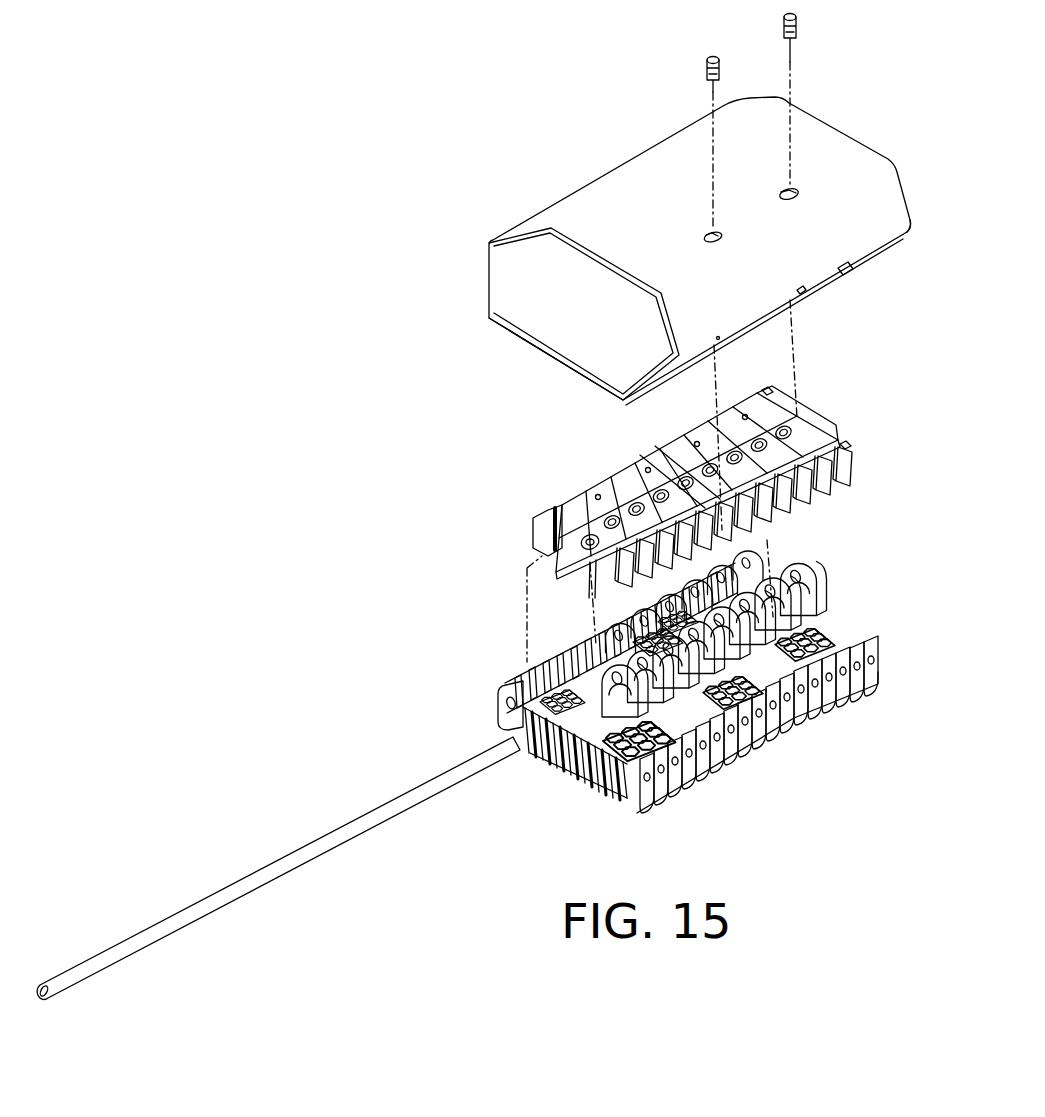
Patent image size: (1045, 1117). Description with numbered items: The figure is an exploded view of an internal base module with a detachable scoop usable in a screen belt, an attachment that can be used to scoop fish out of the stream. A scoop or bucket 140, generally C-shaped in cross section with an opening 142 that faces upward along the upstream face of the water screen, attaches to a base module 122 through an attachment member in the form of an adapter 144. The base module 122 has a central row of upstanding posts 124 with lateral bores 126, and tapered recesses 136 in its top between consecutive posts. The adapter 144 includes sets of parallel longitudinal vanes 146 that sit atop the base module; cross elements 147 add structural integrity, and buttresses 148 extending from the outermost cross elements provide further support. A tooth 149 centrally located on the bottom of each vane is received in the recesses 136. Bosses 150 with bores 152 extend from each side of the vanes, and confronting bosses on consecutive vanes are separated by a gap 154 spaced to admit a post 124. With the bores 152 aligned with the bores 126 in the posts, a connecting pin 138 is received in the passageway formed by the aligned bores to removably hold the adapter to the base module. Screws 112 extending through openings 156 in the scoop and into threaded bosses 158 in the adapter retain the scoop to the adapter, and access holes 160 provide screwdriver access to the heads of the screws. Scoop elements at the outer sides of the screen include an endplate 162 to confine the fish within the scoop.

The screws 112 is at (797, 31).
The base module 122 is at (783, 730).
The posts 124 is at (818, 606).
The lateral bores 126 is at (792, 575).
The tapered recesses 136 is at (570, 758).
The connecting pin 138 is at (353, 823).
The scoop 140 is at (588, 195).
The opening 142 is at (845, 277).
The adapter 144 is at (838, 433).
The longitudinal vanes 146 is at (575, 540).
The cross elements 147 is at (768, 395).
The buttresses 148 is at (838, 487).
The tooth 149 is at (584, 576).
The bosses 150 is at (798, 415).
The bores 152 is at (560, 508).
The gap 154 is at (658, 447).
The openings 156 is at (806, 296).
The threaded bosses 158 is at (613, 475).
The access holes 160 is at (791, 191).
The endplate 162 is at (880, 256).